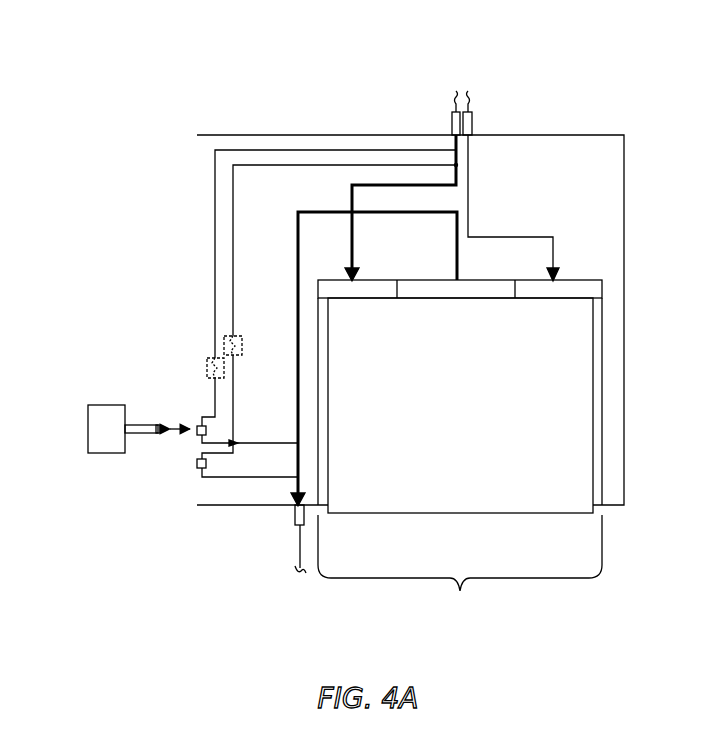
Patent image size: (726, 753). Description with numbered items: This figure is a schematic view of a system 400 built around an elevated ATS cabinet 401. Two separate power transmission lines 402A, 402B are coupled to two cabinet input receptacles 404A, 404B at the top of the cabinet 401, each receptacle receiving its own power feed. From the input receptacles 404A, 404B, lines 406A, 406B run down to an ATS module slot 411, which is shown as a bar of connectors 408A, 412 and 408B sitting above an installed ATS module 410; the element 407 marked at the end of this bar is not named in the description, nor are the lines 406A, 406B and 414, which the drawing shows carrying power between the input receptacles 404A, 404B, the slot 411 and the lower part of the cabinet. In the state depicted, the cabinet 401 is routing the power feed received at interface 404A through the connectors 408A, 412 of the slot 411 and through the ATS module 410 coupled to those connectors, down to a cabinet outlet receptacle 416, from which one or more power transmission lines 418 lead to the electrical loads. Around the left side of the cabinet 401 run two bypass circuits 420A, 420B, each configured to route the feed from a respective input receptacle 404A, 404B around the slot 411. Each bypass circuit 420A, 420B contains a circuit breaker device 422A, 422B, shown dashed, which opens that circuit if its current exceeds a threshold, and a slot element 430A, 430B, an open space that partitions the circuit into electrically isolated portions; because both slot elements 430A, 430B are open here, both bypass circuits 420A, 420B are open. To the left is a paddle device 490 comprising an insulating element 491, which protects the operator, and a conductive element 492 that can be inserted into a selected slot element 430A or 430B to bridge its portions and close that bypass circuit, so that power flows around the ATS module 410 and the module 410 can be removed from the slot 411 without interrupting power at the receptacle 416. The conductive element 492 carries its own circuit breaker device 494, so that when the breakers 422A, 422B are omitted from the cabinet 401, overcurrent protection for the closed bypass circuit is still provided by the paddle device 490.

The system 400 is at (258, 45).
The ATS cabinet 401 is at (582, 157).
The power transmission line 402A is at (447, 98).
The power transmission line 402B is at (478, 98).
The cabinet input receptacle 404A is at (447, 118).
The cabinet input receptacle 404B is at (478, 118).
The first conductor 406A is at (350, 186).
The second conductor 406B is at (508, 237).
The heater terminal block 407 is at (614, 292).
The connector 408A is at (370, 297).
The second heater terminal 408B is at (537, 297).
The ATS module 410 is at (444, 405).
The ATS module slot 411 is at (460, 565).
The connector 412 is at (444, 297).
The ground conductor 414 is at (298, 213).
The cabinet outlet receptacle 416 is at (294, 517).
The power transmission line 418 is at (293, 545).
The bypass circuit 420A is at (233, 150).
The bypass circuit 420B is at (290, 165).
The circuit breaker device 422A is at (210, 360).
The circuit breaker device 422B is at (240, 336).
The slot element 430A is at (198, 418).
The slot element 430B is at (198, 468).
The paddle device 490 is at (92, 392).
The insulating element 491 is at (94, 437).
The conductive element 492 is at (143, 433).
The circuit breaker device 494 is at (156, 425).